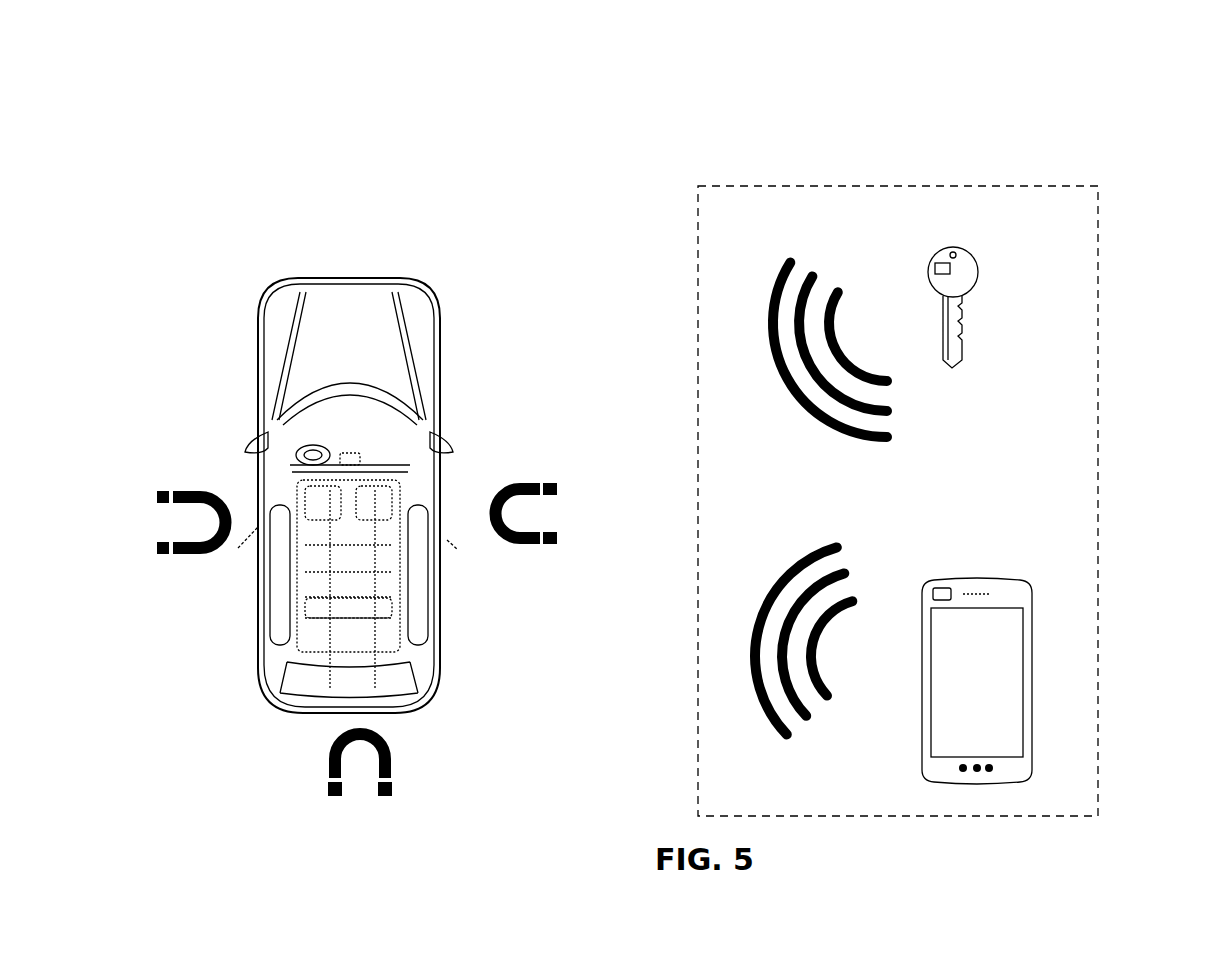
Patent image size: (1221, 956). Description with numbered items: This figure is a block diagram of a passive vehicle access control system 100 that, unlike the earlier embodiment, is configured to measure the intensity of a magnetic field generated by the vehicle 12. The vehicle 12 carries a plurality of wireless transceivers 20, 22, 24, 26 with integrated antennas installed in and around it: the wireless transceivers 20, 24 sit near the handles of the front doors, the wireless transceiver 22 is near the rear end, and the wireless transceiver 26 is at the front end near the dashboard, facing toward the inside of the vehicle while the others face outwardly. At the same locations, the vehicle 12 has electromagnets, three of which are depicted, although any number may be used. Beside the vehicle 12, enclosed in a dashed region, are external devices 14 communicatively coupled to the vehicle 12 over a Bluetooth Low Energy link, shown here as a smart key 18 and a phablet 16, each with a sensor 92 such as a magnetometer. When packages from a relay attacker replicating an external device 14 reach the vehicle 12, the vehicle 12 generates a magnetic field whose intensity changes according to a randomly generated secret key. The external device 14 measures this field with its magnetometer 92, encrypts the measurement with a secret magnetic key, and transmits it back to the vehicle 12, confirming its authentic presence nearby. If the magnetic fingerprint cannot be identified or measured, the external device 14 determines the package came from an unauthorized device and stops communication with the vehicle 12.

The vehicle 12 is at (258, 310).
The external device 14 is at (836, 187).
The phablet 16 is at (1061, 623).
The smart key 18 is at (999, 283).
The wireless transceiver 20 is at (252, 500).
The wireless transceiver 22 is at (385, 675).
The wireless transceiver 24 is at (462, 475).
The wireless transceiver 26 is at (351, 445).
The sensor 92 is at (942, 262).
The system 100 is at (978, 125).